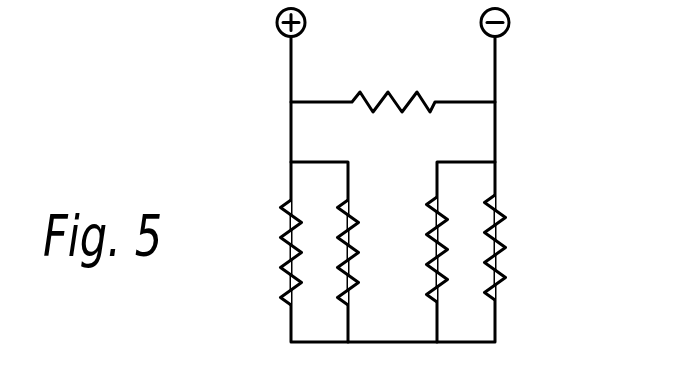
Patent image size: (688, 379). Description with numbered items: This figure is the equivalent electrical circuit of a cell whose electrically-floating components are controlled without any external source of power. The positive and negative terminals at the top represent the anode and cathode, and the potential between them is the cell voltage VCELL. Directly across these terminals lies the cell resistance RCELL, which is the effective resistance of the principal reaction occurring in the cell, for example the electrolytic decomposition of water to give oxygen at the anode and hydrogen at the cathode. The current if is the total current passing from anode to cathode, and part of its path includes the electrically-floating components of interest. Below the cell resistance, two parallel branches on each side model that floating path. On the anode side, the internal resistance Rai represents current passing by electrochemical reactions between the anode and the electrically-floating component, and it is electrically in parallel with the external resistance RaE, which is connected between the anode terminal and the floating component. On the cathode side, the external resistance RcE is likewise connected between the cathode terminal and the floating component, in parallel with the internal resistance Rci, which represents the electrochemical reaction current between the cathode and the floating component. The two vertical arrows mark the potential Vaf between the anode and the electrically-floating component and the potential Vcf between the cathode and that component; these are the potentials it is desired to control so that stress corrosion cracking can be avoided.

The cell voltage VCELL is at (493, 53).
The cell resistance RCELL is at (393, 91).
The current if is at (432, 115).
The internal anode resistance Rai is at (303, 252).
The external anode resistance RaE is at (359, 252).
The external cathode resistance RcE is at (448, 249).
The internal cathode resistance Rci is at (505, 247).
The anode-to-floating-component potential Vaf is at (198, 343).
The cathode-to-floating-component potential Vcf is at (599, 342).